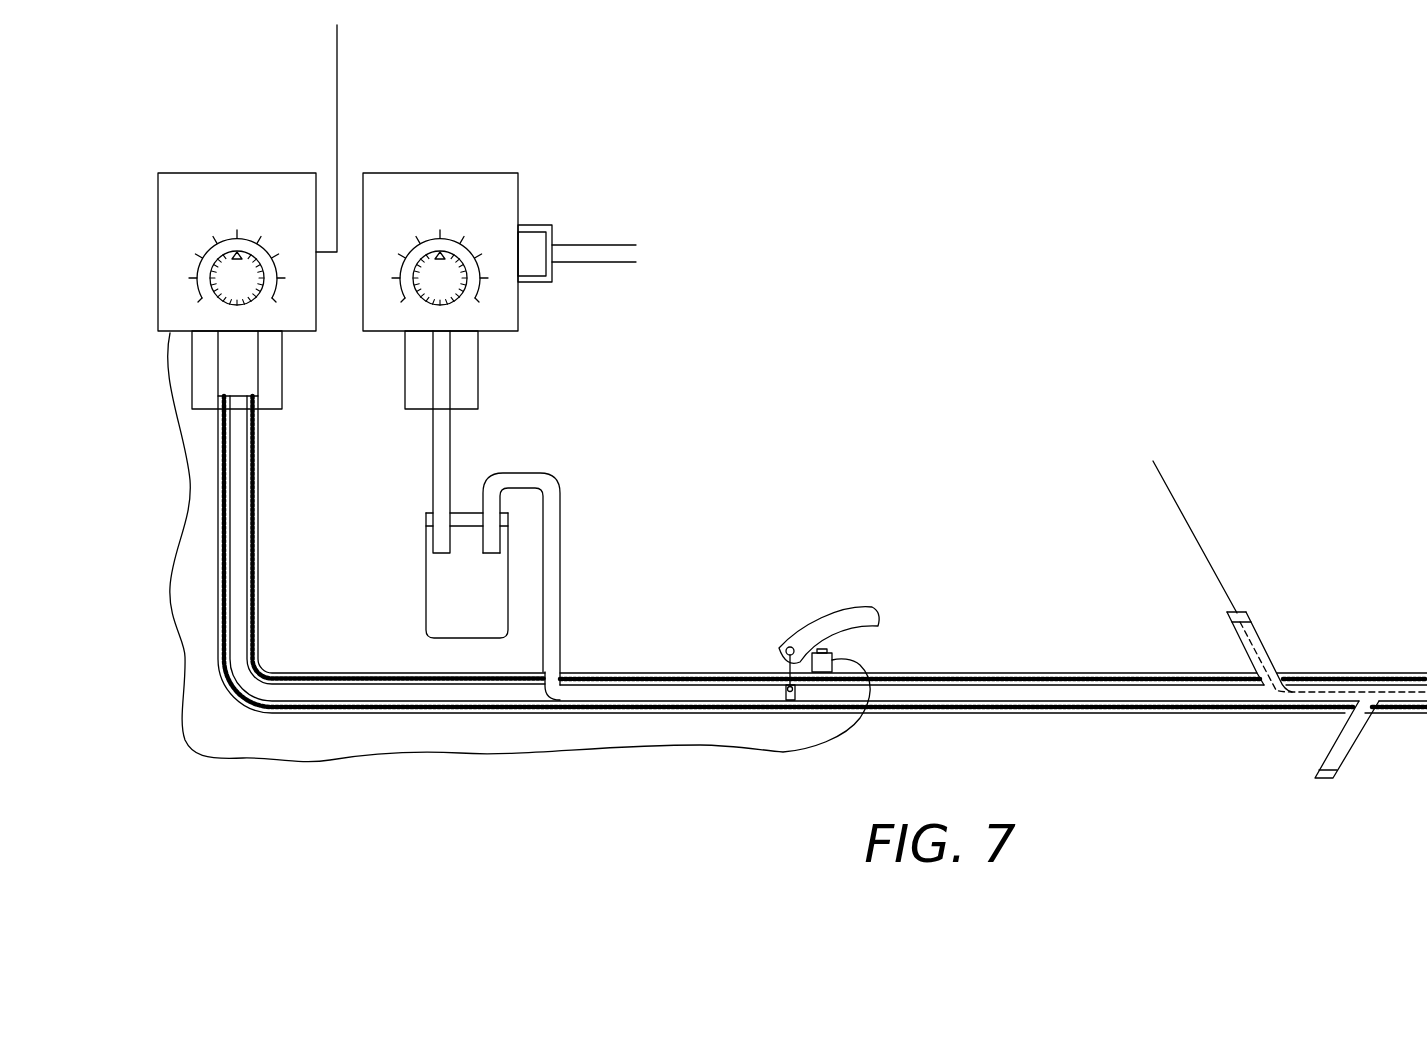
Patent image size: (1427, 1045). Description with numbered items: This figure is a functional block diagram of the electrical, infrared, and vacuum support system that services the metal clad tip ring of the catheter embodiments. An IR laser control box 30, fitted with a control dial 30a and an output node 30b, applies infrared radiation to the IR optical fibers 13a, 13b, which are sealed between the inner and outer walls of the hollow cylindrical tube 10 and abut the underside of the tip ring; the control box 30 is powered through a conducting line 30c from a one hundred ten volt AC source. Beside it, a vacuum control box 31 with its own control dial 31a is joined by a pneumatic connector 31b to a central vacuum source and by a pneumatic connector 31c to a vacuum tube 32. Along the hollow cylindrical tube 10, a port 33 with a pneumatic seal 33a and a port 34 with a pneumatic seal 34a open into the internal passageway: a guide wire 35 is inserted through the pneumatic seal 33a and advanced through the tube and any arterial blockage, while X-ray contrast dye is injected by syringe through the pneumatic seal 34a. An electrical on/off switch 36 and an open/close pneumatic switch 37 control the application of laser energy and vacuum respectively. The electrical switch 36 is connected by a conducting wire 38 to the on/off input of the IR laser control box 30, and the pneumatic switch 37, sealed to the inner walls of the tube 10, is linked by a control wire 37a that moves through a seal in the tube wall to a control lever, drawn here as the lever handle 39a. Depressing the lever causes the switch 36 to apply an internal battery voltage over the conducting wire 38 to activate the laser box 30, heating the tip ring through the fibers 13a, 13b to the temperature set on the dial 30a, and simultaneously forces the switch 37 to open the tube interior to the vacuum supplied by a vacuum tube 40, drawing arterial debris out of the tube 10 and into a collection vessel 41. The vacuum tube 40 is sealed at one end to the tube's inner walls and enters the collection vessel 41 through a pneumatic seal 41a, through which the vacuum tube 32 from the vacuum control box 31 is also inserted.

The hollow cylindrical tube 10 is at (822, 583).
The IR optical fiber 13a is at (1133, 675).
The IR optical fiber 13b is at (1072, 712).
The IR laser control box 30 is at (166, 222).
The control dial 30a is at (236, 306).
The output node 30b is at (250, 370).
The conducting line 30c is at (339, 77).
The vacuum control box 31 is at (503, 226).
The control dial 31a is at (442, 307).
The pneumatic connector 31b is at (597, 248).
The pneumatic connector 31c is at (441, 374).
The vacuum tube 32 is at (432, 441).
The port 33 is at (1258, 647).
The pneumatic seal 33a is at (1242, 612).
The port 34 is at (1348, 737).
The pneumatic seal 34a is at (1327, 773).
The guide wire 35 is at (1178, 501).
The electrical on/off switch 36 is at (833, 655).
The open/close pneumatic switch 37 is at (786, 689).
The control wire 37a is at (786, 661).
The conducting wire 38 is at (550, 760).
The lever handle 39a is at (858, 617).
The vacuum tube 40 is at (556, 585).
The collection vessel 41 is at (457, 604).
The pneumatic seal 41a is at (463, 517).